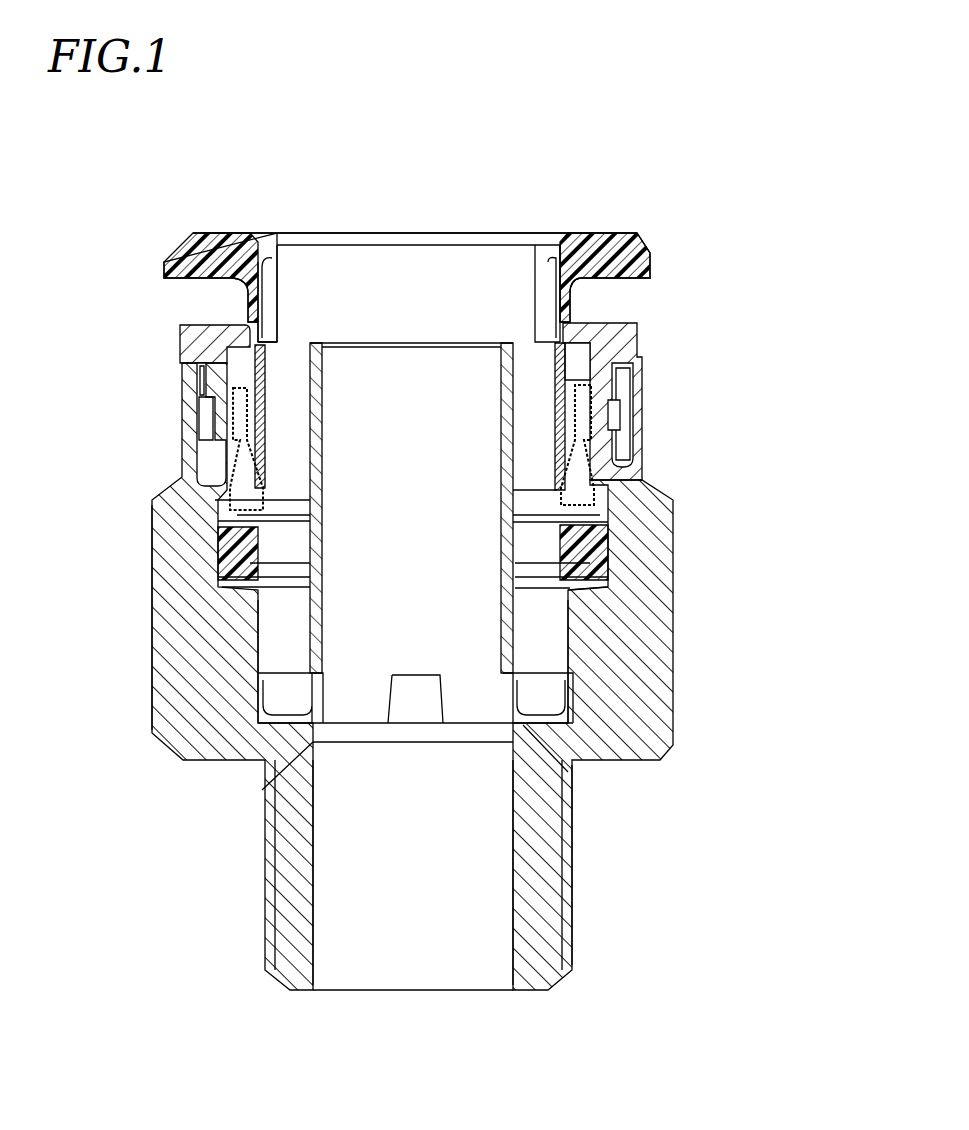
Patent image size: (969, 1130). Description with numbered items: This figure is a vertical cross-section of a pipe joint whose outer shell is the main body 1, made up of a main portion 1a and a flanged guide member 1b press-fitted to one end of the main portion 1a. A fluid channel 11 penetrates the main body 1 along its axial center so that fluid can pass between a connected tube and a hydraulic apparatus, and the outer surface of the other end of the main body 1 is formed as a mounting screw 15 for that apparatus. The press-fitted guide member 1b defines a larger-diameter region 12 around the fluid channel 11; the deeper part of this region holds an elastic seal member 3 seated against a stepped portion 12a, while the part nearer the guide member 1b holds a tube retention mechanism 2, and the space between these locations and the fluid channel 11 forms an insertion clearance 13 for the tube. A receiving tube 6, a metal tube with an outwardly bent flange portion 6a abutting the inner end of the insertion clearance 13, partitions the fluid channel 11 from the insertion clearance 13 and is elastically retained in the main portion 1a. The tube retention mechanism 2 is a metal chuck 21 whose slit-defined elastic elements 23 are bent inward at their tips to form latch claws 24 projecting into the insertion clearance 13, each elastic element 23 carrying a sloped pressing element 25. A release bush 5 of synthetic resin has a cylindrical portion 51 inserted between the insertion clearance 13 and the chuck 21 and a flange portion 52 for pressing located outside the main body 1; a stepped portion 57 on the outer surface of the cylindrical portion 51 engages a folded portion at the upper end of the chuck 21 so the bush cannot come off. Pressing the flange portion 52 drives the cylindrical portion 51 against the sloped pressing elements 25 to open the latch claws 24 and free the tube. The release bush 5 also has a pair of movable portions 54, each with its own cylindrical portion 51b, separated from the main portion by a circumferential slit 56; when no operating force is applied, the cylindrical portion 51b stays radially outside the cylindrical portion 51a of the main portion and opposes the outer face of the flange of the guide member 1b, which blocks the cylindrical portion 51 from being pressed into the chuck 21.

The main body 1 is at (104, 381).
The main portion 1a is at (160, 603).
The guide member 1b is at (198, 343).
The tube retention mechanism 2 is at (637, 340).
The elastic seal member 3 is at (612, 543).
The release bush 5 is at (176, 198).
The receiving tube 6 is at (513, 622).
The flange portion 6a is at (268, 705).
The fluid channel 11 is at (440, 876).
The larger-diameter region 12 is at (224, 488).
The stepped portion 12a is at (612, 568).
The insertion clearance 13 is at (630, 440).
The mounting screw 15 is at (574, 862).
The chuck 21 is at (597, 395).
The elastic element 23 is at (632, 483).
The latch claw 24 is at (280, 503).
The sloped pressing element 25 is at (560, 493).
The cylindrical portion 51 is at (270, 438).
The cylindrical portion of the main portion 51a is at (272, 420).
The cylindrical portion of the movable portion 51b is at (574, 296).
The flange portion 52 is at (393, 228).
The movable portion 54 is at (647, 226).
The slit 56 is at (258, 336).
The stepped portion 57 is at (205, 400).